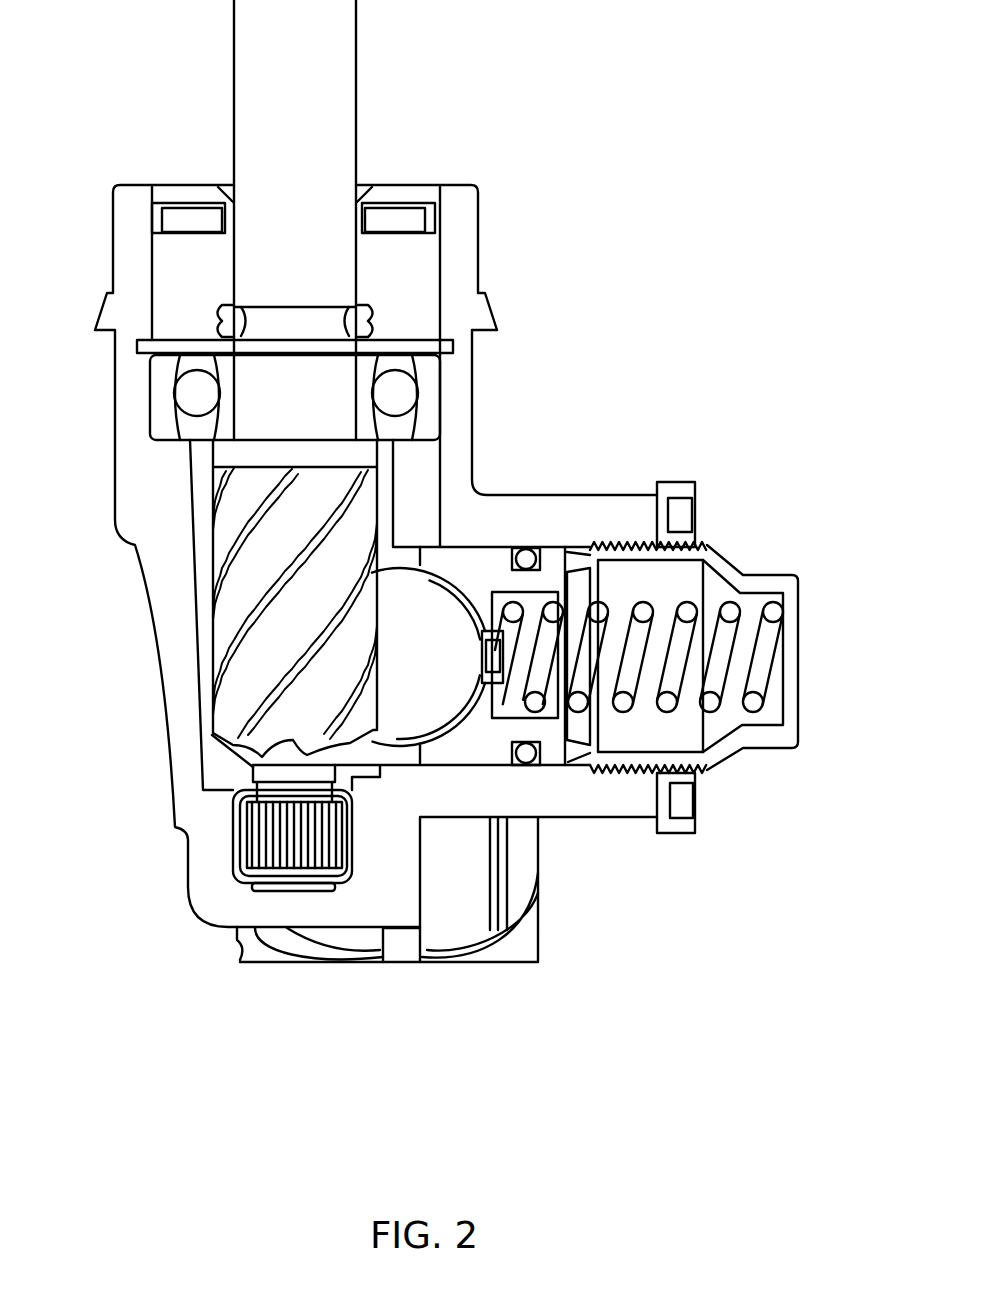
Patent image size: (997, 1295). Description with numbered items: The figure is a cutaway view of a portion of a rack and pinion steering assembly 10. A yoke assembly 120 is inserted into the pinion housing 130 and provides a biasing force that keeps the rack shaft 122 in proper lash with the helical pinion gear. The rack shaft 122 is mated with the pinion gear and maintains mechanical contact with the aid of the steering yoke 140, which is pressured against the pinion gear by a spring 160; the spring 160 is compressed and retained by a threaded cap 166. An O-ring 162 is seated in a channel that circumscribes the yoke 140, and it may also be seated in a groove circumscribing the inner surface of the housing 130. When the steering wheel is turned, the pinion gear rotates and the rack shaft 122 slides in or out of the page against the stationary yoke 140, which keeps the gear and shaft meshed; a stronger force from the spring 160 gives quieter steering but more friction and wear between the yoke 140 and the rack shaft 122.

The steering assembly 10 is at (278, 680).
The yoke assembly 120 is at (705, 677).
The rack shaft 122 is at (418, 612).
The pinion housing 130 is at (452, 452).
The steering yoke 140 is at (485, 578).
The spring 160 is at (753, 703).
The O-ring 162 is at (530, 757).
The threaded cap 166 is at (792, 582).